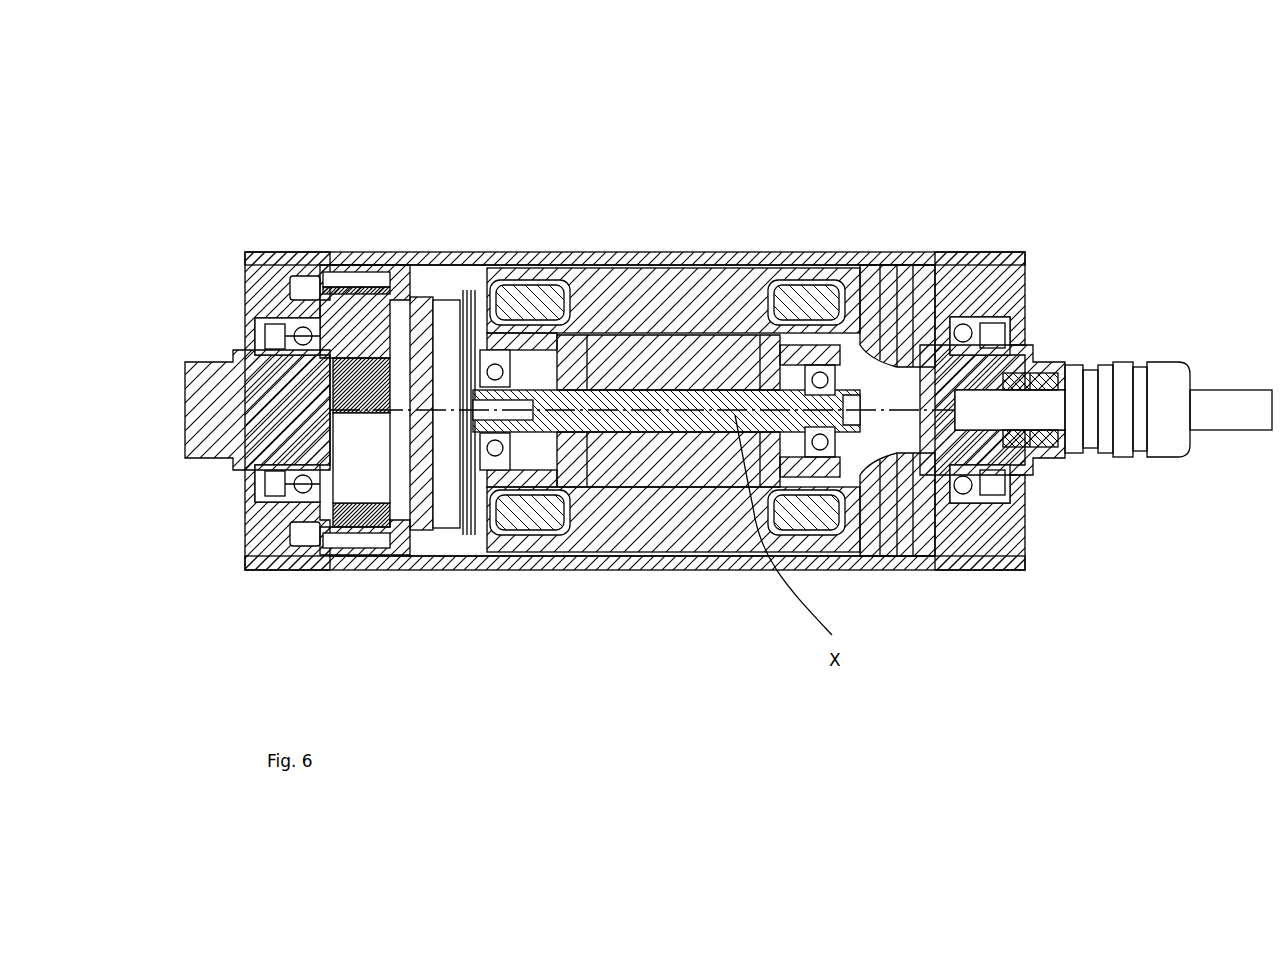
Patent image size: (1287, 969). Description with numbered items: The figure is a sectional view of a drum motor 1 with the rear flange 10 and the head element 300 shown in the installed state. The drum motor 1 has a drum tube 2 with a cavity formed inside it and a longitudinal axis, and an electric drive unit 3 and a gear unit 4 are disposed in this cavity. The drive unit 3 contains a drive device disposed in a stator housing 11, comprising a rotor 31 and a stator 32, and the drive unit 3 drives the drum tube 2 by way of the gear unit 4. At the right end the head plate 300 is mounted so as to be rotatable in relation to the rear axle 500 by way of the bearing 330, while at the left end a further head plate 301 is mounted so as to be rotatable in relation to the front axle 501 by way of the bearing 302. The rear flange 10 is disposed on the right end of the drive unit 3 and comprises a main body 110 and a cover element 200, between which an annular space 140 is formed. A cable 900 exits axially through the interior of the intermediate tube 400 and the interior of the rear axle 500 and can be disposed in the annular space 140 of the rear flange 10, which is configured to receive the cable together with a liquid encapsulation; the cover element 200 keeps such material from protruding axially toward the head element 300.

The drum motor 1 is at (628, 168).
The drum tube 2 is at (372, 250).
The electric drive unit 3 is at (722, 226).
The gear unit 4 is at (485, 243).
The rear flange 10 is at (945, 165).
The stator housing 11 is at (775, 262).
The rotor 31 is at (628, 455).
The stator 32 is at (565, 512).
The main body 110 is at (895, 226).
The annular space 140 is at (887, 522).
The cover element 200 is at (930, 280).
The head element 300 is at (1035, 275).
The further head plate 301 is at (235, 278).
The bearing 302 is at (235, 325).
The bearing 330 is at (1035, 320).
The intermediate tube 400 is at (918, 465).
The rear axle 500 is at (1037, 472).
The front axle 501 is at (200, 388).
The cable 900 is at (1220, 415).